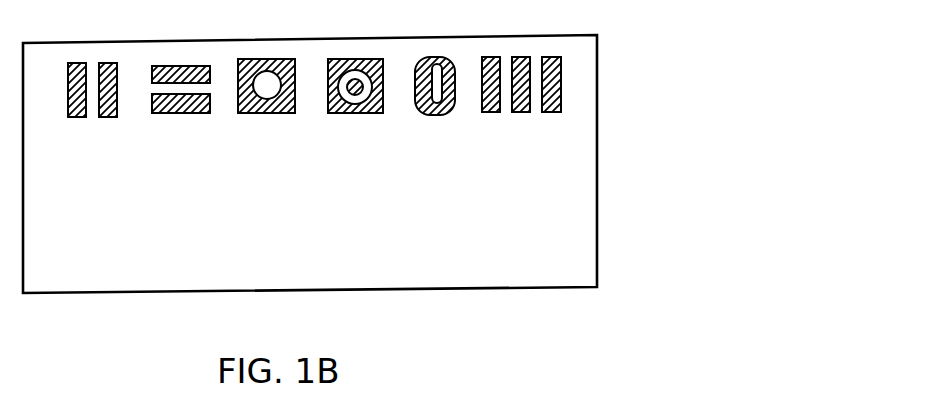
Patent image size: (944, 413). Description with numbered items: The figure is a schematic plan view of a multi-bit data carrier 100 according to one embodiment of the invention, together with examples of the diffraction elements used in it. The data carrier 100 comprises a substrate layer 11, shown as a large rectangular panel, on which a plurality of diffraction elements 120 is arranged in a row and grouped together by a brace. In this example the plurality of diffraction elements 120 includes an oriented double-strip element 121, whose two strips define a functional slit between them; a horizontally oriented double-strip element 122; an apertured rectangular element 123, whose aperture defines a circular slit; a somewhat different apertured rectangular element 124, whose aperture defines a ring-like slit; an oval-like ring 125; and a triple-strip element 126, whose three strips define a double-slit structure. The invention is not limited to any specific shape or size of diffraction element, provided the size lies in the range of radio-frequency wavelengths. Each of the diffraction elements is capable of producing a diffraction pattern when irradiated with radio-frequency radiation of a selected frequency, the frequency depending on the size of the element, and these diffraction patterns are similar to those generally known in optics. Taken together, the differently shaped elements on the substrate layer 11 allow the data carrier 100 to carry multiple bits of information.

The substrate layer 11 is at (597, 230).
The multi-bit data carrier 100 is at (637, 110).
The plurality of diffraction elements 120 is at (580, 200).
The oriented double-strip element 121 is at (91, 117).
The horizontally oriented double-strip element 122 is at (181, 113).
The apertured rectangular element 123 is at (268, 113).
The apertured rectangular element 124 is at (358, 113).
The oval-like ring 125 is at (437, 115).
The triple-strip element 126 is at (517, 112).